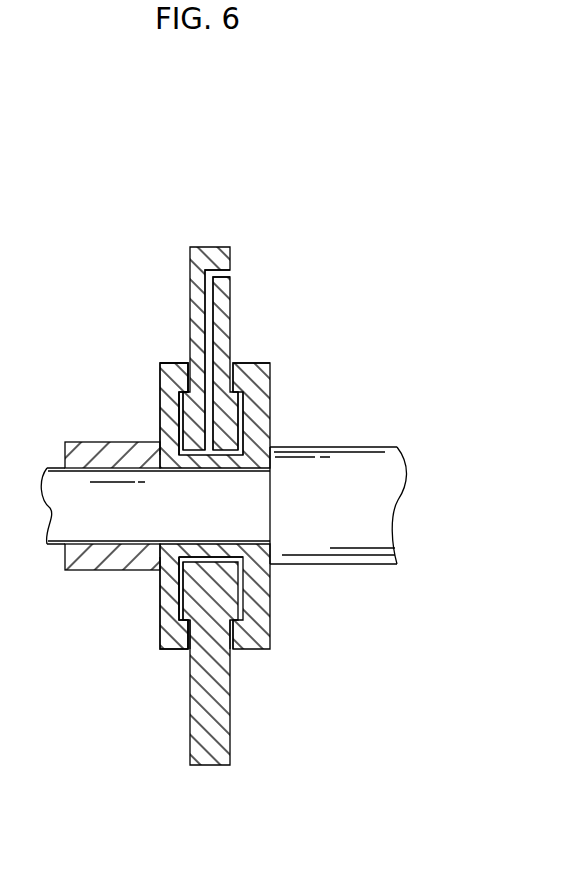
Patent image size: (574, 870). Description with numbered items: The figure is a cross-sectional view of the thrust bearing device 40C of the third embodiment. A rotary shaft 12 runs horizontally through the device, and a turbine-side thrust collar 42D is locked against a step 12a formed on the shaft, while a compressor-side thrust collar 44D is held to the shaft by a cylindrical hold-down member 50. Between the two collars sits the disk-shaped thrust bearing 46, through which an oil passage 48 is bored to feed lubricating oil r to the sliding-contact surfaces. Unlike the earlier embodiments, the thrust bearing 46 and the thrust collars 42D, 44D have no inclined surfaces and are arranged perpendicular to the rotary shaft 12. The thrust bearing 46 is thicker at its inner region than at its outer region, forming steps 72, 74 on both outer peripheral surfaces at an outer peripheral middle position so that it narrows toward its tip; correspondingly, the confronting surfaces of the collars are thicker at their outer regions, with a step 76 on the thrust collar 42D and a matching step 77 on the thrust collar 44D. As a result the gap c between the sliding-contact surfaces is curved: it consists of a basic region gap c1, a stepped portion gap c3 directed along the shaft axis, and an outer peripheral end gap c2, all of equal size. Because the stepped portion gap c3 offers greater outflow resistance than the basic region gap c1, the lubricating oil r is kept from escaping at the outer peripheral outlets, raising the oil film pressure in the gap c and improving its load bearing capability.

The rotary shaft 12 is at (225, 498).
The step 12a is at (271, 556).
The thrust bearing device 40C is at (216, 476).
The thrust collar 42D is at (217, 484).
The thrust collar 44D is at (161, 375).
The thrust bearing 46 is at (232, 476).
The oil passage 48 is at (209, 309).
The cylindrical hold-down member 50 is at (88, 441).
The step 72 is at (245, 398).
The step 74 is at (180, 398).
The step 76 is at (262, 374).
The projection 77 is at (178, 364).
The basic region gap c1 is at (180, 571).
The outer peripheral end gap c2 is at (233, 650).
The stepped portion gap c3 is at (186, 640).
The gap c is at (182, 600).
The lubricating oil r is at (252, 275).